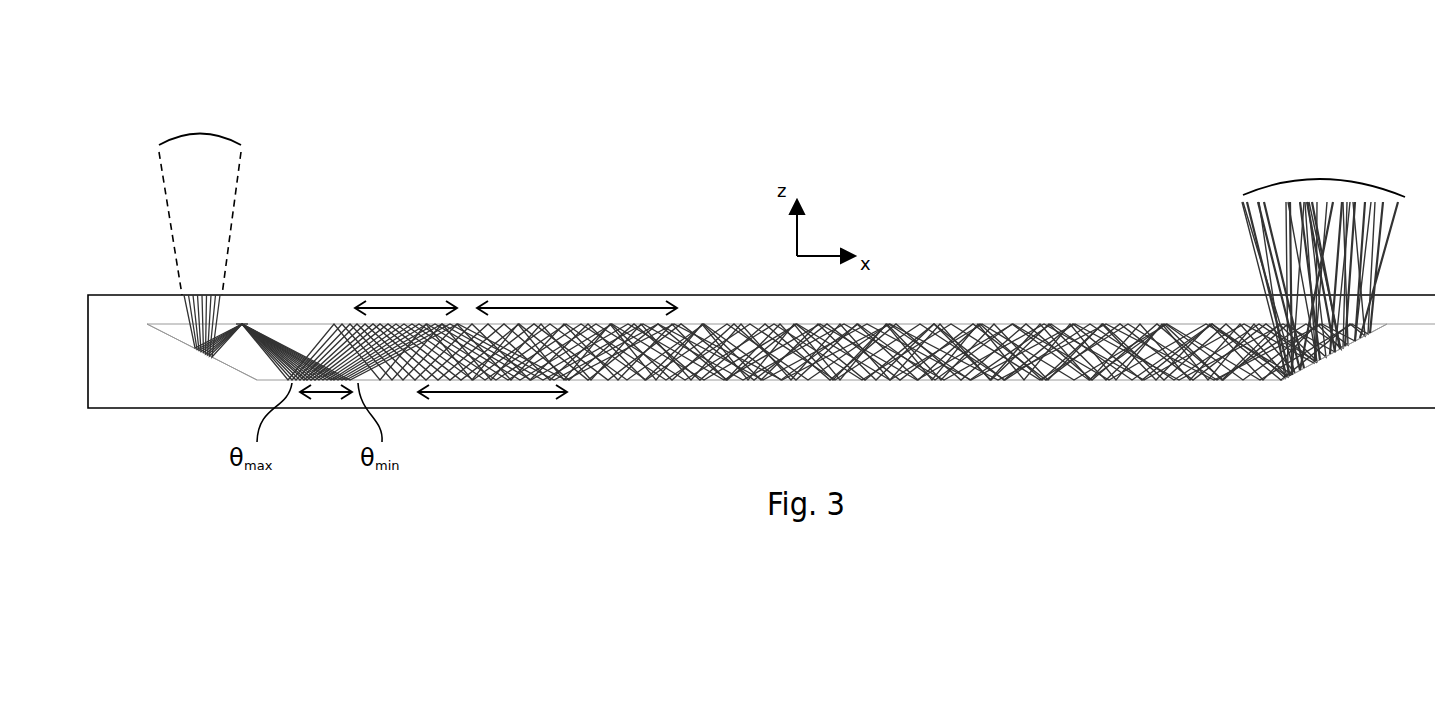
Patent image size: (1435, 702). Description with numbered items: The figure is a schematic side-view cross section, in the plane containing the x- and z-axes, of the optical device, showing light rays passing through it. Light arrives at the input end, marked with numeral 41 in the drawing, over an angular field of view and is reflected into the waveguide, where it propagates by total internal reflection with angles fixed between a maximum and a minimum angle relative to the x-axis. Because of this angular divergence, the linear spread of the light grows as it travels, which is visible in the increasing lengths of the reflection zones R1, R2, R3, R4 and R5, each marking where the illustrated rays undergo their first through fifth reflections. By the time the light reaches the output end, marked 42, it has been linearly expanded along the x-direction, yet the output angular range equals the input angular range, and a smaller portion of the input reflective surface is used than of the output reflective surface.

The input coupler 41 is at (180, 238).
The output coupler 42 is at (1268, 237).
The first reflection zone R1 is at (246, 314).
The second reflection zone R2 is at (328, 400).
The third reflection zone R3 is at (397, 303).
The fourth reflection zone R4 is at (508, 398).
The fifth reflection zone R5 is at (548, 303).